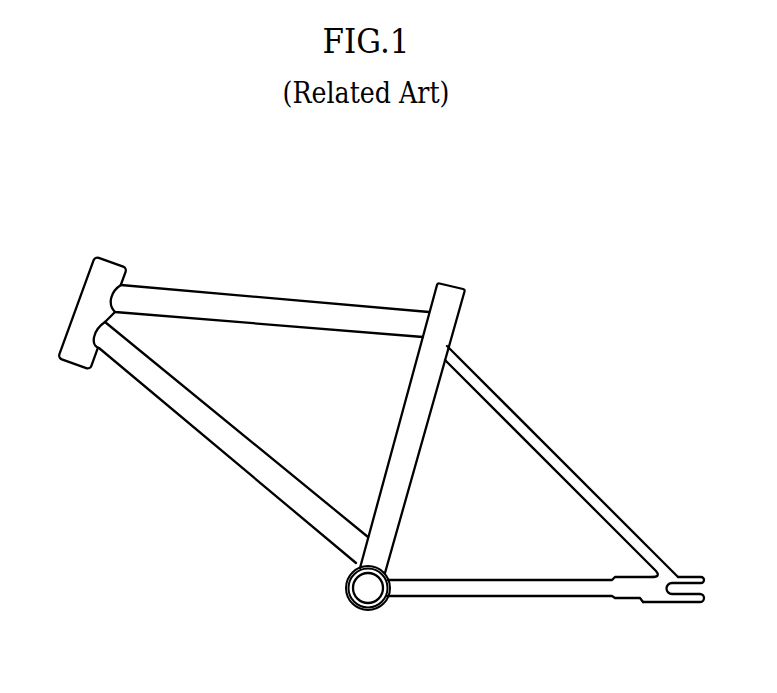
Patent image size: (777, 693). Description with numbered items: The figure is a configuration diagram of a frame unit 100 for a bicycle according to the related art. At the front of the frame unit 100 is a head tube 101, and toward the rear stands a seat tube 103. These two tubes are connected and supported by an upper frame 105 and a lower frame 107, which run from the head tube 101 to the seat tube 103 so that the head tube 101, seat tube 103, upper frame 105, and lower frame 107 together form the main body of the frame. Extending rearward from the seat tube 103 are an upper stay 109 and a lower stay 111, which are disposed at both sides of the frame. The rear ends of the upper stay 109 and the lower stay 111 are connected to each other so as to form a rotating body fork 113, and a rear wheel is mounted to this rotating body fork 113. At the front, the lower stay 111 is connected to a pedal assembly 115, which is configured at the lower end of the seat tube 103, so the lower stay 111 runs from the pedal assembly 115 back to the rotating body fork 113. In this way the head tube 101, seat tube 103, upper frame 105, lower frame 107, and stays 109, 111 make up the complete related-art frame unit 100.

The frame unit 100 is at (580, 296).
The head tube 101 is at (88, 305).
The seat tube 103 is at (448, 288).
The upper frame 105 is at (243, 293).
The lower frame 107 is at (243, 462).
The upper stay 109 is at (573, 470).
The lower stay 111 is at (503, 600).
The rotating body fork 113 is at (687, 578).
The pedal assembly 115 is at (357, 607).